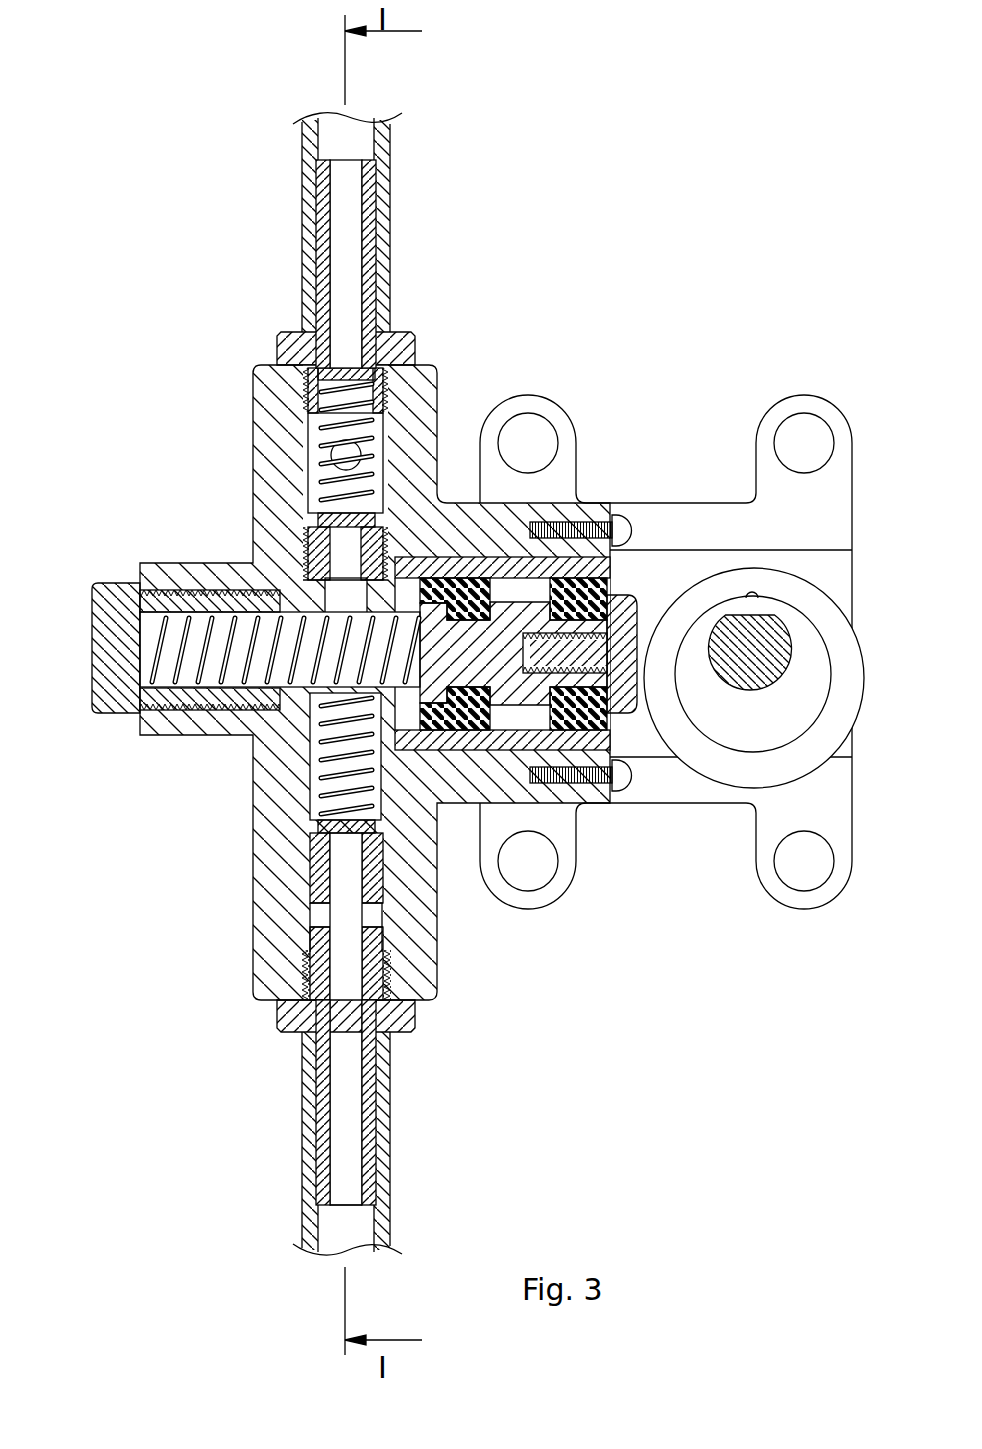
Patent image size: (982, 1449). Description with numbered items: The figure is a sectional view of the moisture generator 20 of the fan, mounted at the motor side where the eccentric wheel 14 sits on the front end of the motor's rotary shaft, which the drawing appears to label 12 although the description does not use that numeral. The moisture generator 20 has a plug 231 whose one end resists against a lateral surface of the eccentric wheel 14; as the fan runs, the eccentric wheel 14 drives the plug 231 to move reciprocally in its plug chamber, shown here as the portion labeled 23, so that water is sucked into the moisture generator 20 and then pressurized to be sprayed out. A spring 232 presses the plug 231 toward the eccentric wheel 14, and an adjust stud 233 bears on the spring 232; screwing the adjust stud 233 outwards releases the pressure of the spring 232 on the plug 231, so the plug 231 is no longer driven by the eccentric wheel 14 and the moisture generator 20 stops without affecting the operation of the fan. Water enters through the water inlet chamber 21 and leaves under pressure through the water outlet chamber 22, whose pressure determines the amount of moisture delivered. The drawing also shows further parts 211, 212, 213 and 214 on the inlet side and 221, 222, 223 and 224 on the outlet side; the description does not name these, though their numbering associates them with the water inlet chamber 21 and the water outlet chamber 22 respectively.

The shaft 12 is at (750, 684).
The eccentric wheel 14 is at (733, 770).
The moisture generator 20 is at (253, 906).
The water inlet chamber 21 is at (378, 806).
The lower spring seat 211 is at (317, 830).
The lower spring 212 is at (317, 790).
The lower inner tube 213 is at (315, 1115).
The lower outer tube 214 is at (390, 1115).
The water outlet chamber 22 is at (315, 442).
The upper spring seat 221 is at (378, 518).
The upper spring 222 is at (313, 480).
The upper inner tube 223 is at (315, 248).
The upper outer tube 224 is at (388, 248).
The cylinder housing 23 is at (523, 590).
The plug 231 is at (523, 700).
The spring 232 is at (230, 680).
The adjust stud 233 is at (120, 583).